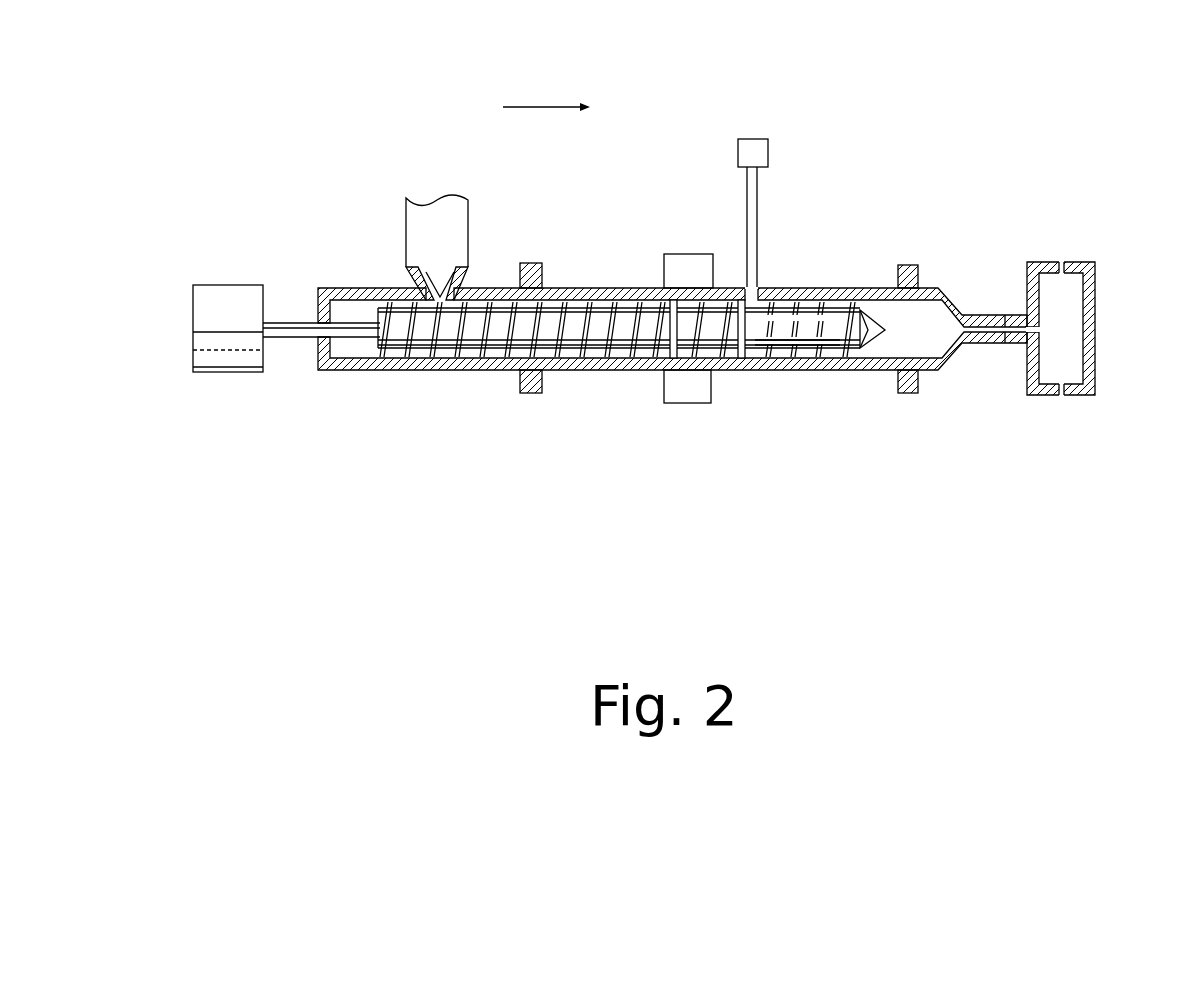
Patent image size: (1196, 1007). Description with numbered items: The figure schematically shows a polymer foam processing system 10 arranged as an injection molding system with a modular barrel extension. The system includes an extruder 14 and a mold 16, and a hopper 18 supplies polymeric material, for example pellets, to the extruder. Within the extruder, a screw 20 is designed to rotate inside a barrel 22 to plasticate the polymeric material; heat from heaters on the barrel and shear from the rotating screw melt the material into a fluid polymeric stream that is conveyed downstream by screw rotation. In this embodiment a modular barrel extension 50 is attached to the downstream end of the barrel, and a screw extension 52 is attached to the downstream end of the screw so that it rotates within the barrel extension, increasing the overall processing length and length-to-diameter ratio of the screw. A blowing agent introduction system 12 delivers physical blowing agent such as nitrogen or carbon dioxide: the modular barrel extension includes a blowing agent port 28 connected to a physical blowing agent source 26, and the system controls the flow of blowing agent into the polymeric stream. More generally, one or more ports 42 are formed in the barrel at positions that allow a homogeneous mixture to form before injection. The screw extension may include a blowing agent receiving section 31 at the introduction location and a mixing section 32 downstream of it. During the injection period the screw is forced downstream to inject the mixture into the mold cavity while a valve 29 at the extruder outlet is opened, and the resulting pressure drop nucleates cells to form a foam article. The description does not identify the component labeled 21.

The polymer foam processing system 10 is at (625, 112).
The blowing agent introduction system 12 is at (800, 198).
The extruder 14 is at (599, 378).
The mold 16 is at (1100, 290).
The hopper 18 is at (440, 207).
The screw 20 is at (612, 305).
The barrel heating section 21 is at (558, 298).
The barrel 22 is at (440, 371).
The physical blowing agent source 26 is at (769, 157).
The blowing agent port 28 is at (762, 290).
The valve 29 is at (1006, 312).
The blowing agent receiving section 31 is at (764, 358).
The mixing section 32 is at (820, 358).
The port 42 is at (738, 366).
The modular barrel extension 50 is at (878, 290).
The screw extension 52 is at (851, 287).